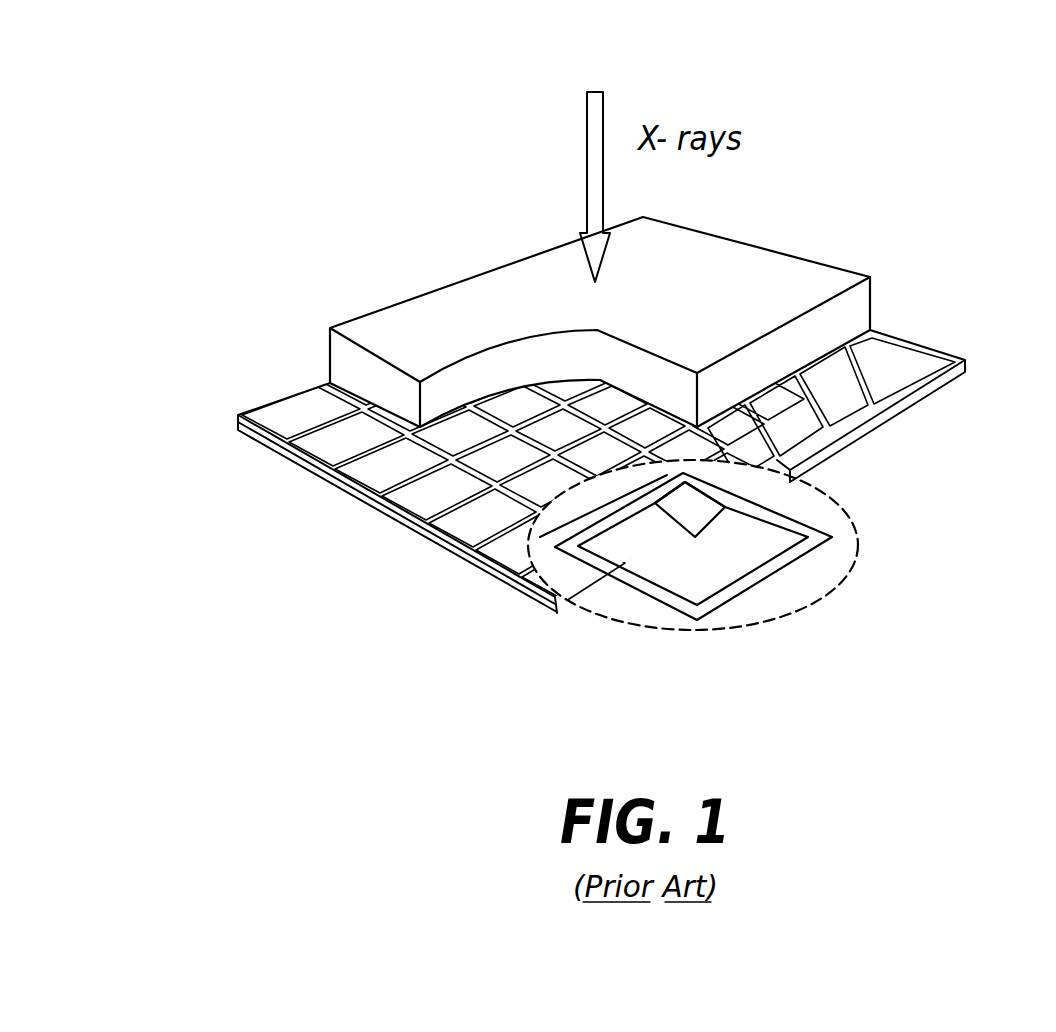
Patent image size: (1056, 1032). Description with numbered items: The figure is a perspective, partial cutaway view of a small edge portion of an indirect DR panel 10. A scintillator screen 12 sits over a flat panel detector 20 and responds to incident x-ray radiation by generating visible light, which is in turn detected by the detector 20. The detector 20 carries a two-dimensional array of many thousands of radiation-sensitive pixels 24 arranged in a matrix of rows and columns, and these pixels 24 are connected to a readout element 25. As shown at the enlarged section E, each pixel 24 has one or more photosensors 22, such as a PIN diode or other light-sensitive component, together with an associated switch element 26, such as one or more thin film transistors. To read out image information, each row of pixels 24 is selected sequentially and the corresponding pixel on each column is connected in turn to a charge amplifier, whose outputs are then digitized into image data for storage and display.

The indirect DR panel 10 is at (921, 81).
The scintillator screen 12 is at (397, 312).
The flat panel detector 20 is at (352, 497).
The photosensor 22 is at (690, 557).
The pixel 24 is at (558, 475).
The readout element 25 is at (332, 440).
The switch element 26 is at (690, 502).
The enlarged section E is at (683, 632).